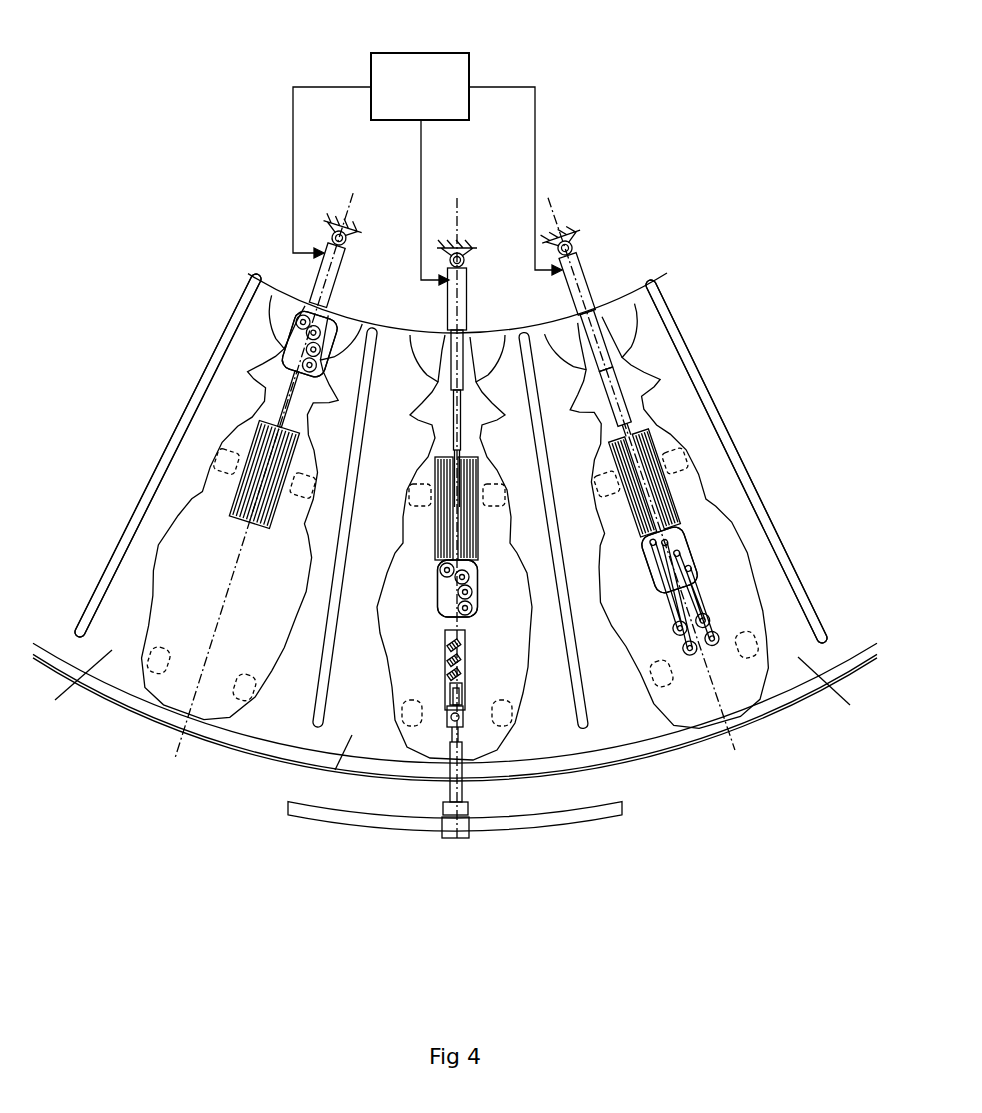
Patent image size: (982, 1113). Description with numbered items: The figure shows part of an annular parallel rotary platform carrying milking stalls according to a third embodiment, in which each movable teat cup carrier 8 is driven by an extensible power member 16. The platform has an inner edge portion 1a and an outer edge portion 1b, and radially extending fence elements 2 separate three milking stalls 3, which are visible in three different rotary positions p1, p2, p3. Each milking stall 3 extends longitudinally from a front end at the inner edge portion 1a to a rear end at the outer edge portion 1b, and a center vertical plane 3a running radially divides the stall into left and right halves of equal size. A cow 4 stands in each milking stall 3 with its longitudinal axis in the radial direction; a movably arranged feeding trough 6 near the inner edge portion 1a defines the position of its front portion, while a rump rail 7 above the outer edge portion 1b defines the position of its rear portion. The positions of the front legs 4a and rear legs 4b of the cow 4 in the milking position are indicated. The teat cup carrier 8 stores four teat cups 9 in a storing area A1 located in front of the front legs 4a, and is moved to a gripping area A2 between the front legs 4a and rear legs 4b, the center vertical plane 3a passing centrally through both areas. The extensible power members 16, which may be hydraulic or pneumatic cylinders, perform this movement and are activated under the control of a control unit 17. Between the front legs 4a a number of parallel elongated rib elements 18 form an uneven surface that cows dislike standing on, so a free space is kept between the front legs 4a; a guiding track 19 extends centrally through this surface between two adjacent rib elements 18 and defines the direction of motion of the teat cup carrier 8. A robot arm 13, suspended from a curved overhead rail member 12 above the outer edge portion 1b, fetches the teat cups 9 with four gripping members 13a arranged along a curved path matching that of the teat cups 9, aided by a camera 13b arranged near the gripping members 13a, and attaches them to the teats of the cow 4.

The control unit 17 is at (415, 87).
The center vertical plane 3a is at (347, 222).
The extensible power member 16 is at (322, 293).
The feeding trough 6 is at (287, 318).
The inner edge portion 1a is at (538, 322).
The outer edge portion 1b is at (752, 718).
The fence element 2 is at (167, 455).
The milking stall 3 is at (128, 588).
The cow 4 is at (182, 565).
The front legs 4a is at (232, 462).
The rear legs 4b is at (243, 688).
The teat cup carrier 8 is at (293, 352).
The teat cups 9 is at (322, 352).
The guiding track 19 is at (285, 402).
The rib element 18 is at (270, 497).
The robot arm 13 is at (445, 756).
The gripping member 13a is at (463, 637).
The camera 13b is at (467, 692).
The rail member 12 is at (562, 823).
The rump rail 7 is at (168, 725).
The storing area A1 is at (297, 340).
The gripping area A2 is at (447, 583).
The rotary position p1 is at (73, 688).
The rotary position p2 is at (332, 768).
The rotary position p3 is at (836, 694).